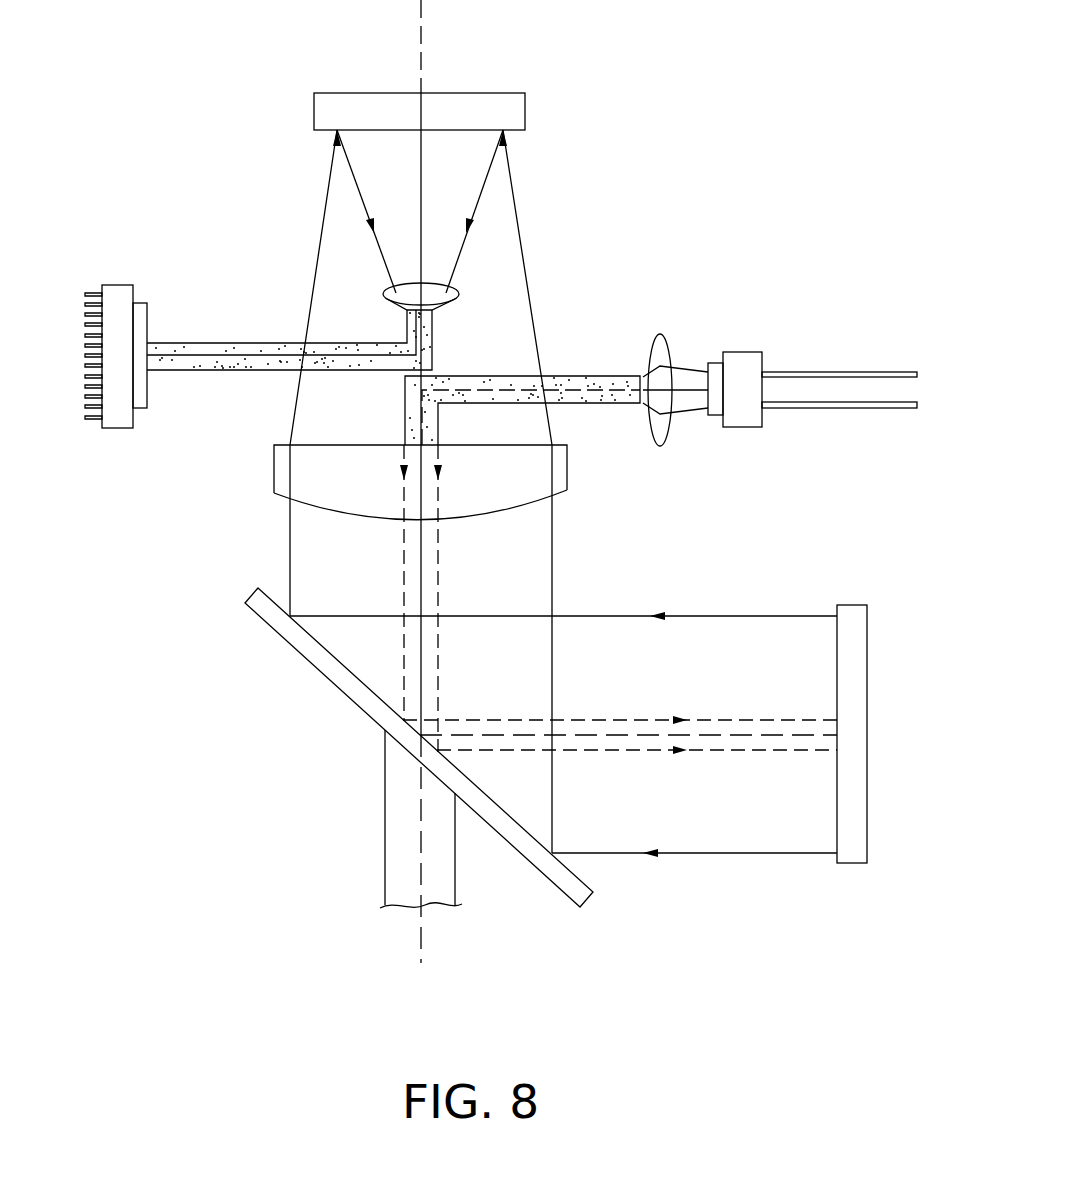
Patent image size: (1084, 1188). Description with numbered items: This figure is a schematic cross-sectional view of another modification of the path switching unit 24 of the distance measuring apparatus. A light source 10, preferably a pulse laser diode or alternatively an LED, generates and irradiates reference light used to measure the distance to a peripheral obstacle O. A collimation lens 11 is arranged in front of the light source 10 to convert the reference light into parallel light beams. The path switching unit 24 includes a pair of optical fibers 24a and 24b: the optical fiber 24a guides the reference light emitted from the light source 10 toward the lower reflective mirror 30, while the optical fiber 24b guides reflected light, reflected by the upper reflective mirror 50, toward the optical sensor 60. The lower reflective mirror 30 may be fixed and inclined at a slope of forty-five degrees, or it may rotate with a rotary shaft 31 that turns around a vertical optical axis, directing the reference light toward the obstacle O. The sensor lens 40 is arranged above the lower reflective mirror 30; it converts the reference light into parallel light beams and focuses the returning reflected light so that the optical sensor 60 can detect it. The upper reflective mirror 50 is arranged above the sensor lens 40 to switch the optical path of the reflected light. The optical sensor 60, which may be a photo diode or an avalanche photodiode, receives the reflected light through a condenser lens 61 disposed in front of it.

The light source 10 is at (742, 362).
The collimation lens 11 is at (662, 345).
The path switching unit 24 is at (633, 282).
The optical fiber 24a is at (597, 376).
The optical fiber 24b is at (440, 338).
The lower reflective mirror 30 is at (343, 678).
The rotary shaft 31 is at (393, 863).
The sensor lens 40 is at (283, 463).
The upper reflective mirror 50 is at (478, 105).
The optical sensor 60 is at (122, 290).
The condenser lens 61 is at (390, 294).
The peripheral obstacle O is at (853, 855).